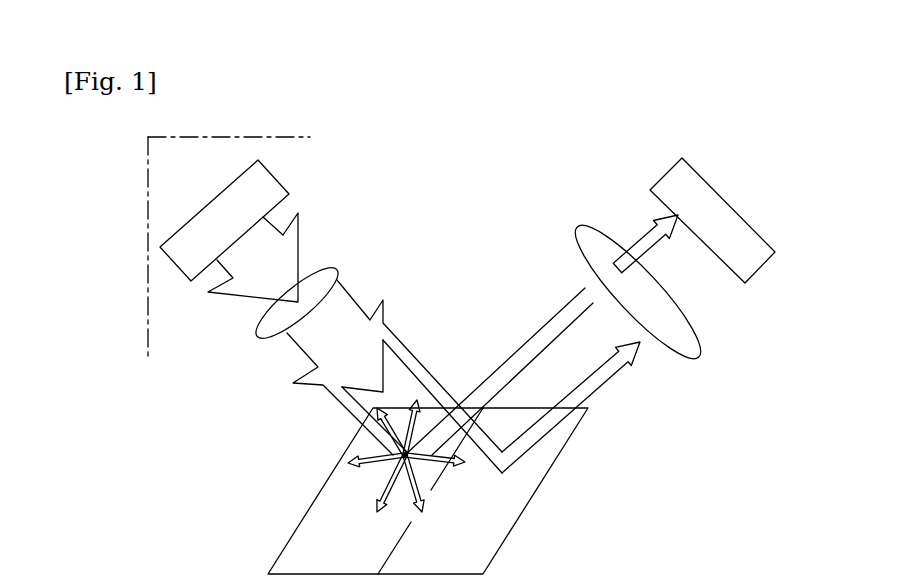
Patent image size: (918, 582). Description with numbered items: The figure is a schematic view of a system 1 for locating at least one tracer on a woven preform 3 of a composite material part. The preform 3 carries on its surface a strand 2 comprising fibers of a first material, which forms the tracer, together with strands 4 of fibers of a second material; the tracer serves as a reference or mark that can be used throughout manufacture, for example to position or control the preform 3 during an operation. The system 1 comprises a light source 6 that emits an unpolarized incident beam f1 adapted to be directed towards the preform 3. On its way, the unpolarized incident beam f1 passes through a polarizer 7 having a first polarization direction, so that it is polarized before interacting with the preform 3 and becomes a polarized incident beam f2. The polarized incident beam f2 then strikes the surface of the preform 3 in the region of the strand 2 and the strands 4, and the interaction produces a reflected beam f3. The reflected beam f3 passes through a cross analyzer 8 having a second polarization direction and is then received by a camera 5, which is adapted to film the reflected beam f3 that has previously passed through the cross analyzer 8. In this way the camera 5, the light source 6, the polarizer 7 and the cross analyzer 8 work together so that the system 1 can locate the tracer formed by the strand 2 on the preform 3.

The system 1 is at (134, 178).
The strand 2 is at (297, 548).
The woven preform 3 is at (551, 506).
The strands 4 is at (484, 532).
The camera 5 is at (714, 208).
The light source 6 is at (248, 182).
The polarizer 7 is at (322, 278).
The cross analyzer 8 is at (683, 344).
The unpolarized incident beam f1 is at (289, 243).
The polarized incident beam f2 is at (345, 317).
The reflected beam f3 is at (649, 231).